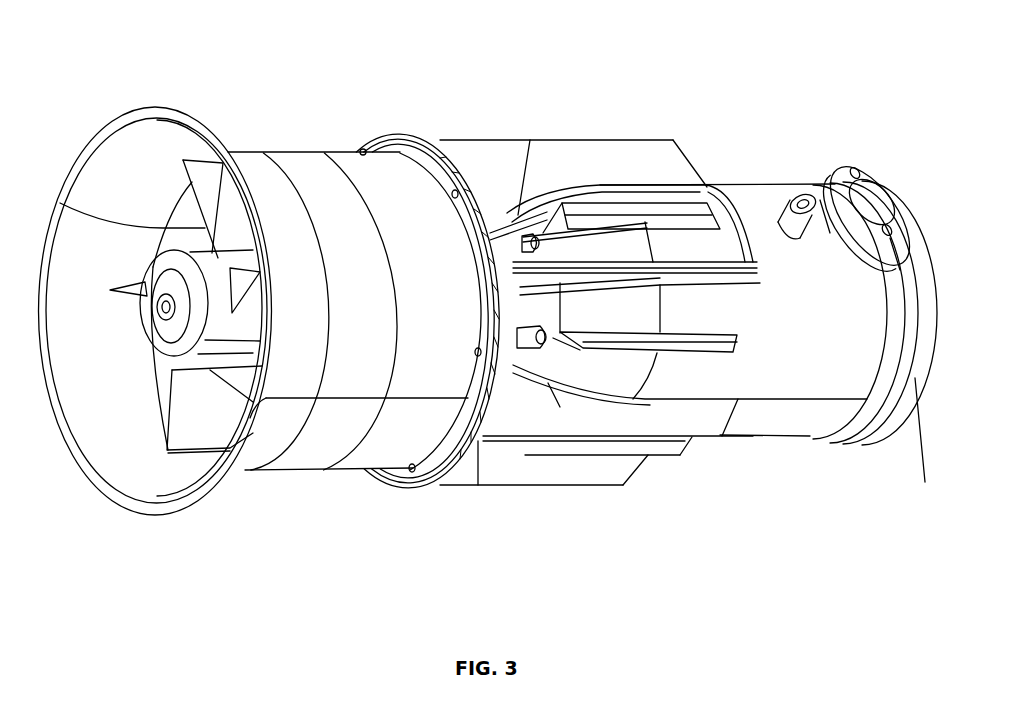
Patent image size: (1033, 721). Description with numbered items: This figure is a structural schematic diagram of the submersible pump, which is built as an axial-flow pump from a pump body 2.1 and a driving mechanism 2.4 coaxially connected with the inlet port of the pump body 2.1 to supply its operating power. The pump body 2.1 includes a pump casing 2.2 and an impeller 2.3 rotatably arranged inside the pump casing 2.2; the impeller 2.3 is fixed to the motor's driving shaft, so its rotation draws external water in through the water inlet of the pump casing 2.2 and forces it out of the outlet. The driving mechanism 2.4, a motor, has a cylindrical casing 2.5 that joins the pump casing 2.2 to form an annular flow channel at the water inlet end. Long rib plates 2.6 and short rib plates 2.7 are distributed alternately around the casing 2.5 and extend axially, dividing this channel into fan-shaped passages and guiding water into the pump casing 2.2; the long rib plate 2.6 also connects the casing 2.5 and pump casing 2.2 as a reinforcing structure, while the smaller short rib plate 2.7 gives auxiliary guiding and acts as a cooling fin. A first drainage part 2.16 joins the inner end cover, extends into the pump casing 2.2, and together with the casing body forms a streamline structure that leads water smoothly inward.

The pump body 2.1 is at (283, 120).
The pump casing 2.2 is at (330, 440).
The impeller 2.3 is at (208, 417).
The driving mechanism 2.4 is at (788, 137).
The casing 2.5 is at (778, 365).
The long rib plate 2.6 is at (603, 160).
The short rib plate 2.7 is at (653, 215).
The first drainage part 2.16 is at (537, 362).